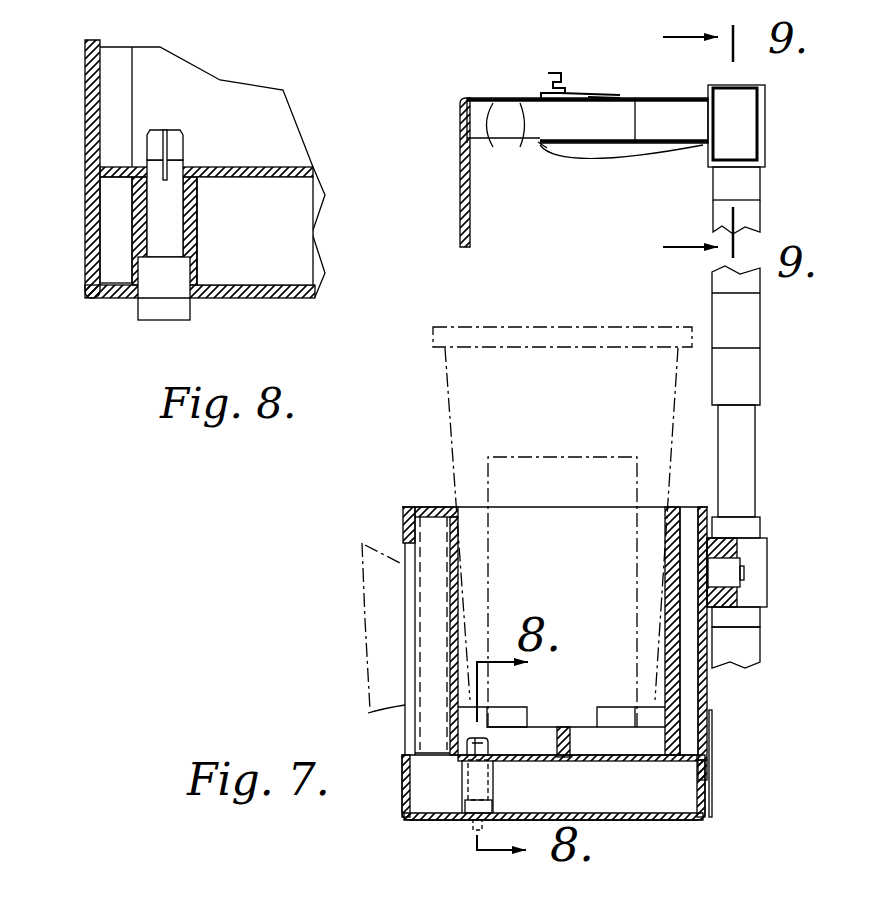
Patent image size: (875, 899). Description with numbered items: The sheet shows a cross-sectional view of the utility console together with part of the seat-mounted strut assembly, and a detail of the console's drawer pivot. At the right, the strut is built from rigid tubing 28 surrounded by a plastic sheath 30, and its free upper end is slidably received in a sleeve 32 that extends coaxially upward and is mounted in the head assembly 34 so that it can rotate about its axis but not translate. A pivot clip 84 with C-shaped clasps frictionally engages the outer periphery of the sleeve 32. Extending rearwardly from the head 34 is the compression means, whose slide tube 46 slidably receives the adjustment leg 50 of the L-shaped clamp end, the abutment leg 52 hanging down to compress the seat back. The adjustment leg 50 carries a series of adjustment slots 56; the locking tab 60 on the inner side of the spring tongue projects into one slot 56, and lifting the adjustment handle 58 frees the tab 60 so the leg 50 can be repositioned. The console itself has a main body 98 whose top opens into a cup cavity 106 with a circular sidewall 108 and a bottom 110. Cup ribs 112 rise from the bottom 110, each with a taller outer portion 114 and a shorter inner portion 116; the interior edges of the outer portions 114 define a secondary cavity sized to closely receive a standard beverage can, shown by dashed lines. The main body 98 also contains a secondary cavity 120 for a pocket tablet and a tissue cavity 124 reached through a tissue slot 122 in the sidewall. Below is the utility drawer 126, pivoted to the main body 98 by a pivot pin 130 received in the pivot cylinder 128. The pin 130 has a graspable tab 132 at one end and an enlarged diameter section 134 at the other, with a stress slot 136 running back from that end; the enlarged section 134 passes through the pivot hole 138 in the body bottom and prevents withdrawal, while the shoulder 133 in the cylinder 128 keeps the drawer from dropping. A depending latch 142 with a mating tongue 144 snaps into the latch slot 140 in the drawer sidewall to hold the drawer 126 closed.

In FIG. 7, the rigid tubing 28 is at (755, 437).
In FIG. 7, the sheath 30 is at (763, 648).
In FIG. 7, the sleeve 32 is at (762, 183).
In FIG. 7, the head assembly 34 is at (767, 110).
In FIG. 7, the slide tube 46 is at (653, 98).
In FIG. 7, the adjustment leg 50 is at (466, 98).
In FIG. 7, the abutment leg 52 is at (467, 200).
In FIG. 7, the adjustment slots 56 is at (505, 139).
In FIG. 7, the adjustment handle 58 is at (555, 72).
In FIG. 7, the locking tab 60 is at (557, 98).
In FIG. 7, the pivot clip 84 is at (768, 557).
In FIG. 8, the main body 98 is at (85, 85).
In FIG. 7, the cup cavity 106 is at (617, 635).
In FIG. 7, the sidewall 108 is at (462, 578).
In FIG. 7, the bottom 110 is at (540, 750).
In FIG. 7, the cup ribs 112 is at (653, 751).
In FIG. 7, the outer portion 114 is at (678, 685).
In FIG. 7, the inner portion 116 is at (590, 727).
In FIG. 7, the secondary cavity 120 is at (688, 518).
In FIG. 7, the tissue slot 122 is at (408, 558).
In FIG. 7, the tissue cavity 124 is at (432, 530).
In FIG. 8, the utility drawer 126 is at (245, 300).
In FIG. 7, the utility drawer 126 is at (658, 820).
In FIG. 8, the pivot cylinder 128 is at (200, 195).
In FIG. 7, the pivot cylinder 128 is at (493, 782).
In FIG. 8, the pivot pin 130 is at (147, 213).
In FIG. 7, the pivot pin 130 is at (470, 783).
In FIG. 8, the tab 132 is at (172, 320).
In FIG. 8, the shoulder 133 is at (193, 255).
In FIG. 8, the enlarged diameter section 134 is at (183, 150).
In FIG. 8, the stress slot 136 is at (165, 130).
In FIG. 8, the pivot hole 138 is at (200, 172).
In FIG. 7, the latch slot 140 is at (702, 773).
In FIG. 7, the depending latch 142 is at (712, 745).
In FIG. 7, the mating tongue 144 is at (710, 780).